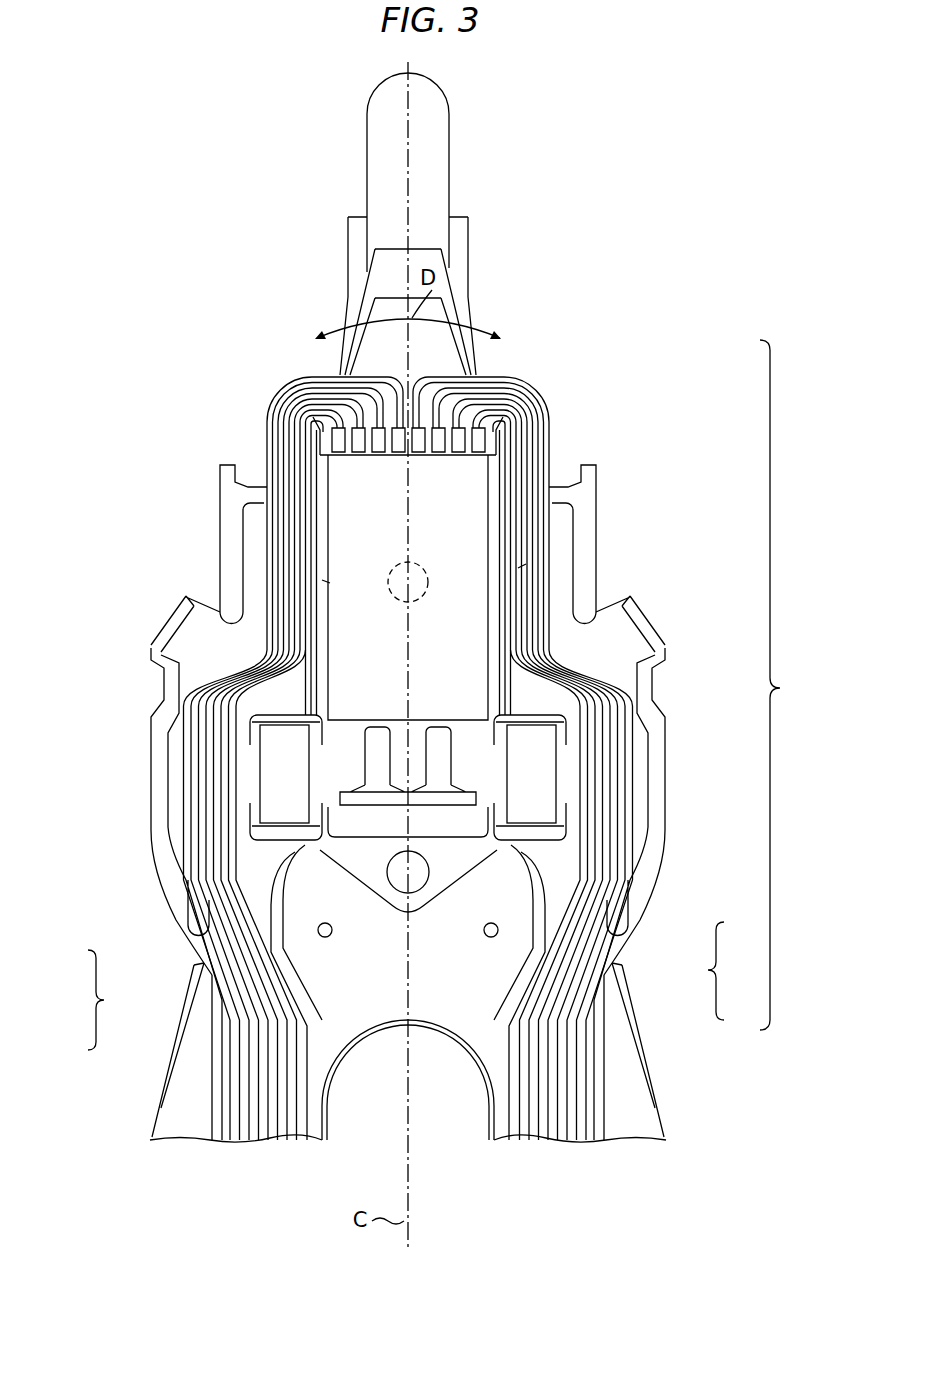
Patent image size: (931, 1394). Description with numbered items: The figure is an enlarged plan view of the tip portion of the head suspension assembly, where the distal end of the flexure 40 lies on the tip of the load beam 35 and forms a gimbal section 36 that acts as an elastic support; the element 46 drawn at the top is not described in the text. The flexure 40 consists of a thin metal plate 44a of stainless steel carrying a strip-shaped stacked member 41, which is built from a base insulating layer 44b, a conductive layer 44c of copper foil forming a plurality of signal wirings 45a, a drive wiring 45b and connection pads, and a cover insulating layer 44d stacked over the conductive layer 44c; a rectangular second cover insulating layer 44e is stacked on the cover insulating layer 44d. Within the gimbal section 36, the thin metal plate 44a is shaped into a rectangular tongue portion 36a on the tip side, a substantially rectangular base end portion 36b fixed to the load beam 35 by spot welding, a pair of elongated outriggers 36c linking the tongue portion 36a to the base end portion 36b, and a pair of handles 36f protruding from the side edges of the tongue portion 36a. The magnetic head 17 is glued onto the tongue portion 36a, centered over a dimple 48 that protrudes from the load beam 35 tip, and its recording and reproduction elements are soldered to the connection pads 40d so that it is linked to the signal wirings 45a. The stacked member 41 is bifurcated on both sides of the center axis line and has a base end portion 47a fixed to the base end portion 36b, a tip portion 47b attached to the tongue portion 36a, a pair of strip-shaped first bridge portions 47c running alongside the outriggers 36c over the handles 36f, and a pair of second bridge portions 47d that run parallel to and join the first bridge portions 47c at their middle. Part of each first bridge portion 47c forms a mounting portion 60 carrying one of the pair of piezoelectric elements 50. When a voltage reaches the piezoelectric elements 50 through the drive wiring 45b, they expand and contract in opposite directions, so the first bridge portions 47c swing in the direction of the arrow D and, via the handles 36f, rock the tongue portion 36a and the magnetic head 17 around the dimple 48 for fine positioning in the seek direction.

The magnetic head 17 is at (385, 535).
The load beam 35 is at (628, 1085).
The gimbal section 36 is at (790, 685).
The tongue portion 36a is at (482, 490).
The base end portion 36b is at (430, 993).
The outriggers 36c is at (235, 575).
The handles 36f is at (328, 582).
The flexure 40 is at (486, 1119).
The connection pads 40d is at (378, 458).
The stacked member 41 is at (238, 1012).
The thin metal plate 44a is at (355, 1022).
The base insulating layer 44b is at (403, 1035).
The conductive layer 44c is at (403, 1050).
The cover insulating layer 44d is at (403, 982).
The second cover insulating layer 44e is at (250, 717).
The signal wirings 45a is at (528, 448).
The drive wiring 45b is at (242, 1108).
The probe rod 46 is at (446, 151).
The base end portion of the stacked member 47a is at (258, 1057).
The tip portion of the stacked member 47b is at (400, 398).
The first bridge portions 47c is at (280, 650).
The second bridge portions 47d is at (615, 718).
The dimple 48 is at (402, 600).
The piezoelectric elements 50 is at (280, 772).
The mounting portions 60 is at (250, 760).